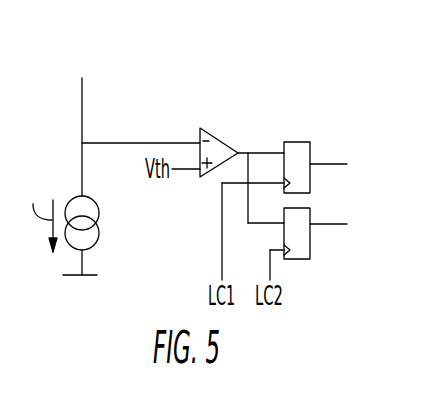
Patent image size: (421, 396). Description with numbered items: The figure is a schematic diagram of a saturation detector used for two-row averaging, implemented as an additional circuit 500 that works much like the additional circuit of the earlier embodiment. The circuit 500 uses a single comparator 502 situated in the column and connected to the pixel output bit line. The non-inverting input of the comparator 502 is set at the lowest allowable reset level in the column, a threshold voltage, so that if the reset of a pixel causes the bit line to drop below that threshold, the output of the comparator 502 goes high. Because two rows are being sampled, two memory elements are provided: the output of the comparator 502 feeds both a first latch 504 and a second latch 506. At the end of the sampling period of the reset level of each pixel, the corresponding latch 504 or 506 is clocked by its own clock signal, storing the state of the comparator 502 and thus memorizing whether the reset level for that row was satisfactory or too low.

The additional circuit 500 is at (81, 103).
The comparator 502 is at (218, 140).
The latch 504 is at (300, 141).
The latch 506 is at (310, 247).